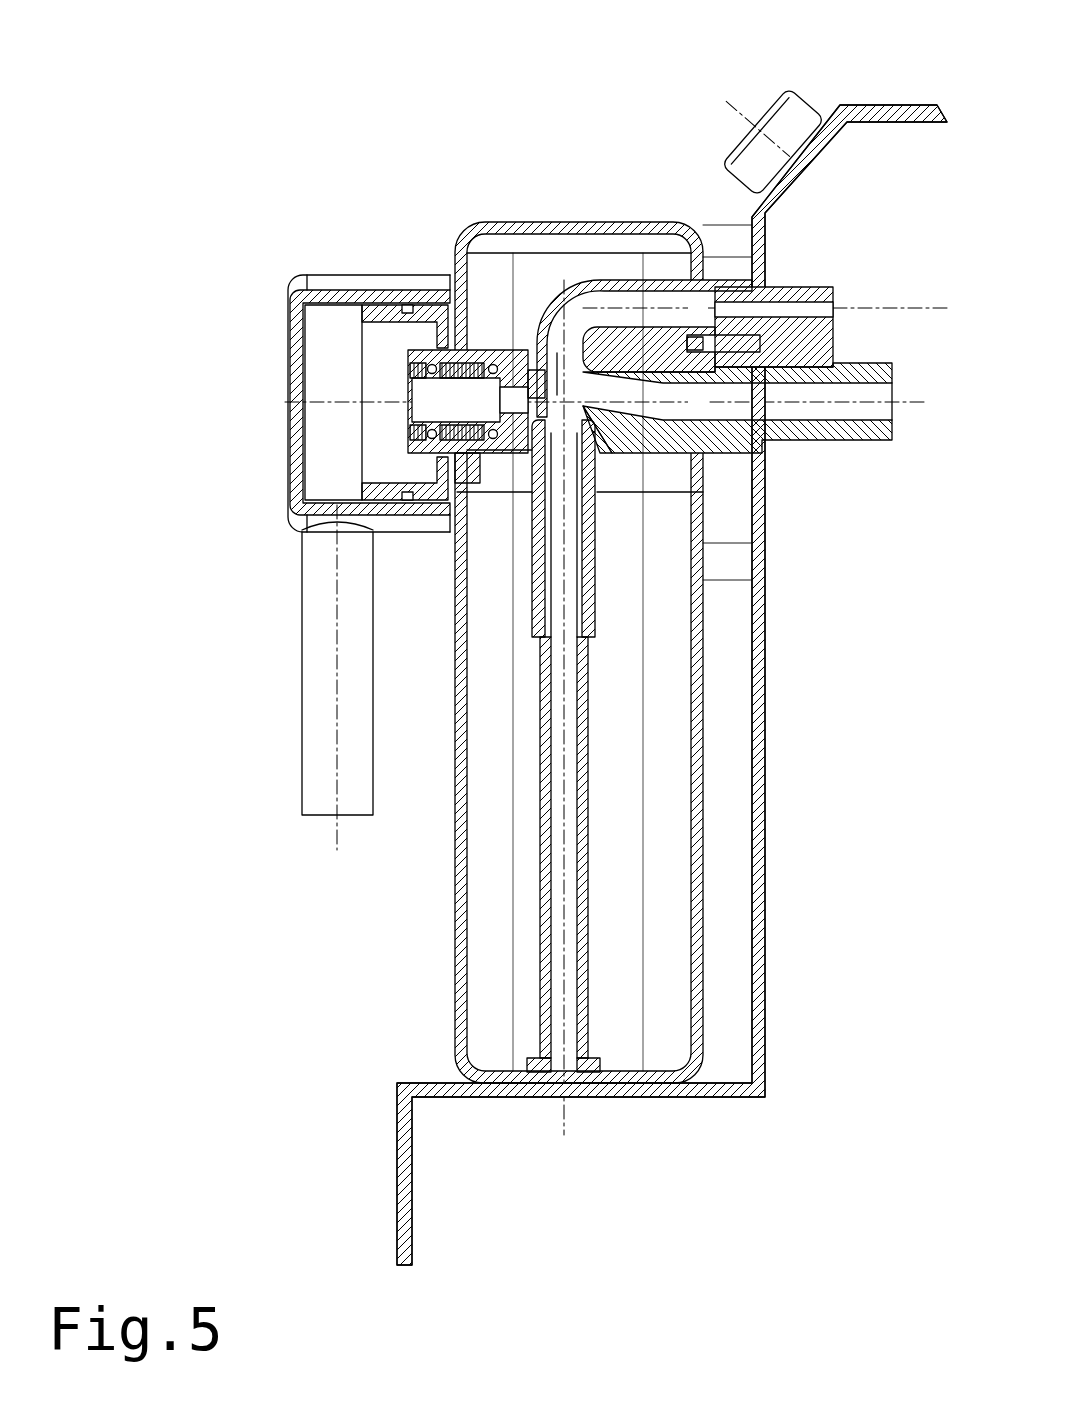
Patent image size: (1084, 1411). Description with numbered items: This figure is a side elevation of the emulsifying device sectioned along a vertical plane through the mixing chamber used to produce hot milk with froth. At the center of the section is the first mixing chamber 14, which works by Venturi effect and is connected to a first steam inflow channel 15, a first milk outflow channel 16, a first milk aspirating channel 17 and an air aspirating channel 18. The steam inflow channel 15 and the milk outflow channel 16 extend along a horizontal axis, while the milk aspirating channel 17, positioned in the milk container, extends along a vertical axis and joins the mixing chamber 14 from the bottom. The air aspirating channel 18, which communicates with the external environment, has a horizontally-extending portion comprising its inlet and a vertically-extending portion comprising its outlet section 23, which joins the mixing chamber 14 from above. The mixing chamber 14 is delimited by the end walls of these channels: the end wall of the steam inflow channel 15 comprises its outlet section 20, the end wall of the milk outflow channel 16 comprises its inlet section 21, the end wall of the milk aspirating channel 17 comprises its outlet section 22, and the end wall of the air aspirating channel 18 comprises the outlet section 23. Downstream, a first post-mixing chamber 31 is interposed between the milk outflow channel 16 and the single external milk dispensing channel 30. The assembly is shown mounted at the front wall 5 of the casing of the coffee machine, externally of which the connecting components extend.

The front wall 5 is at (768, 930).
The first mixing chamber 14 is at (463, 237).
The first steam inflow channel 15 is at (650, 322).
The first milk outflow channel 16 is at (512, 385).
The first milk aspirating channel 17 is at (563, 473).
The air aspirating channel 18 is at (568, 322).
The outlet section of the first steam inflow channel 20 is at (590, 422).
The inlet section of the first milk outflow channel 21 is at (537, 437).
The outlet section of the first milk aspirating channel 22 is at (587, 455).
The outlet section of the air aspirating channel 23 is at (578, 352).
The external milk dispensing channel 30 is at (317, 803).
The first post-mixing chamber 31 is at (453, 400).